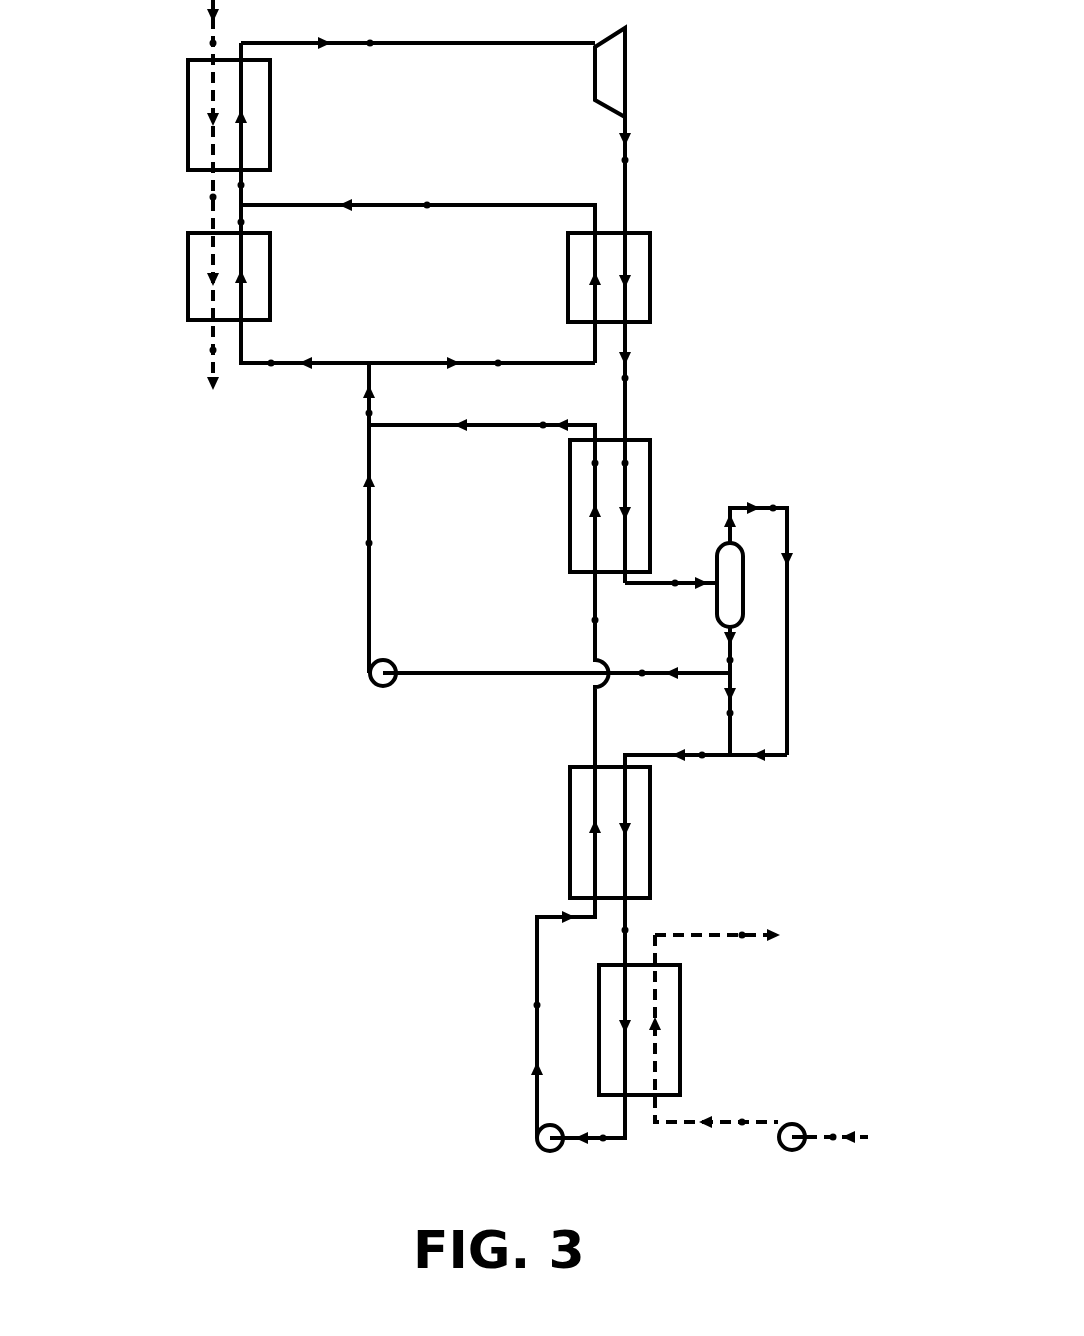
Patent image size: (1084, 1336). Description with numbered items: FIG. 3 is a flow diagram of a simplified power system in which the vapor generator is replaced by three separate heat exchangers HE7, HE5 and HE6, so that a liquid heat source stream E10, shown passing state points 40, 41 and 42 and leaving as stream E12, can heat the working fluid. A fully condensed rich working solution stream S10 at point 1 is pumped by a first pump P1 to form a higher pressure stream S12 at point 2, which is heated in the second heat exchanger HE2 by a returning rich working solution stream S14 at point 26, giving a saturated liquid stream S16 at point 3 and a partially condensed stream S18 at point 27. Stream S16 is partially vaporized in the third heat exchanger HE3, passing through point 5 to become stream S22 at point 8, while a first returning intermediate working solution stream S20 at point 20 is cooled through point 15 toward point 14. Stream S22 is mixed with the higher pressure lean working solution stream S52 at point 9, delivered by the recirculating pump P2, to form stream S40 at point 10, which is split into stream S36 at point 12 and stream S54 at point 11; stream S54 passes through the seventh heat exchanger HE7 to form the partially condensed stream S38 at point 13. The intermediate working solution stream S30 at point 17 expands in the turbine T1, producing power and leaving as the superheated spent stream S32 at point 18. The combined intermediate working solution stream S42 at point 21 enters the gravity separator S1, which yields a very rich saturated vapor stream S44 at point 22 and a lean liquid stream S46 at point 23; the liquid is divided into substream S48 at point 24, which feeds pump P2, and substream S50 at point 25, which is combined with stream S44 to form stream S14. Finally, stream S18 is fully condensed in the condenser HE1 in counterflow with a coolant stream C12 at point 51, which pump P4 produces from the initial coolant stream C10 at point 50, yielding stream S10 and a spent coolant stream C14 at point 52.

The external heat source stream inlet E10 is at (211, 12).
The external heat source stream outlet E12 is at (211, 334).
The heat exchanger HE6 is at (253, 115).
The heat exchanger HE5 is at (253, 276).
The seventh heat exchanger HE7 is at (637, 277).
The third heat exchanger HE3 is at (583, 506).
The second heat exchanger HE2 is at (639, 832).
The condenser HE1 is at (668, 1030).
The turbine T1 is at (627, 72).
The gravity separator S1 is at (746, 585).
The recirculating pump P2 is at (361, 673).
The first pump P1 is at (529, 1138).
The pump P4 is at (790, 1152).
The intermediate working solution stream S30 is at (447, 48).
The spent intermediate working solution stream S32 is at (628, 125).
The partially condensed stream S38 is at (360, 205).
The second returning intermediate working solution stream S36 is at (330, 358).
The stream S54 is at (462, 360).
The first returning intermediate working solution stream S20 is at (627, 410).
The combined intermediate working solution stream S42 is at (657, 578).
The intermediate solution stream S40 is at (360, 378).
The higher pressure lean working solution stream S52 is at (368, 615).
The partially vaporized higher pressure rich working solution stream S22 is at (430, 428).
The heated higher pressure rich working solution stream S16 is at (593, 740).
The substream S48 is at (405, 677).
The very rich saturated vapor stream S44 is at (790, 508).
The lean liquid stream S46 is at (733, 650).
The substream S50 is at (740, 733).
The returning rich working solution stream S14 is at (705, 760).
The partially condensed rich working solution stream S18 is at (627, 920).
The fully condensed rich working solution stream S10 is at (628, 1130).
The higher pressure rich working solution stream S12 is at (525, 975).
The spent coolant stream C14 is at (752, 940).
The coolant stream C12 is at (768, 1120).
The coolant stream C10 is at (840, 1138).
The state point 40 is at (201, 44).
The state point 41 is at (201, 198).
The state point 42 is at (201, 351).
The point 17 is at (370, 33).
The point 13 is at (423, 196).
The point 15 is at (660, 463).
The point 14 is at (252, 223).
The point 12 is at (268, 378).
The point 11 is at (498, 354).
The point 10 is at (356, 414).
The point 9 is at (362, 544).
The point 8 is at (543, 415).
The point 5 is at (592, 463).
The point 18 is at (638, 161).
The point 20 is at (640, 379).
The point 21 is at (675, 596).
The point 22 is at (773, 498).
The point 23 is at (718, 661).
The point 24 is at (640, 664).
The point 25 is at (718, 714).
The point 26 is at (697, 767).
The point 3 is at (588, 621).
The point 27 is at (613, 931).
The point 2 is at (528, 1006).
The point 1 is at (602, 1151).
The point 52 is at (740, 926).
The point 51 is at (740, 1113).
The point 50 is at (833, 1127).